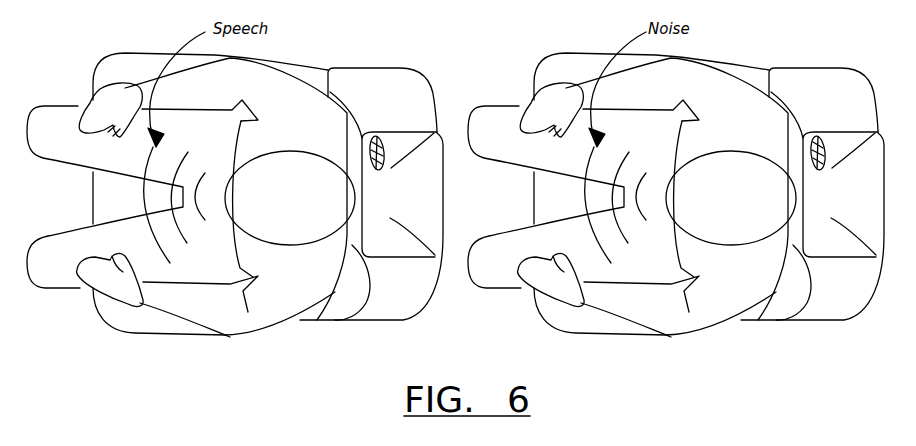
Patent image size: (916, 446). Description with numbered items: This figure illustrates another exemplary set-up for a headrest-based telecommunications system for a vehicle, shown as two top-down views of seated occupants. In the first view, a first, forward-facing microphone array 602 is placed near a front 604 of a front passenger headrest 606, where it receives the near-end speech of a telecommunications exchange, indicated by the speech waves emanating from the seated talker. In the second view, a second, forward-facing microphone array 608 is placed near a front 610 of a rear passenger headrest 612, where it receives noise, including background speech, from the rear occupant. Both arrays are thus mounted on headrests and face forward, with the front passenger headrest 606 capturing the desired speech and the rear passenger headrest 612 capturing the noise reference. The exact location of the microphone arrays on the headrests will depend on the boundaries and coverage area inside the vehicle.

The first forward-facing microphone array 602 is at (372, 137).
The front of front passenger headrest 604 is at (346, 250).
The front passenger headrest 606 is at (397, 243).
The second forward-facing microphone array 608 is at (813, 137).
The front of rear passenger headrest 610 is at (787, 250).
The rear passenger headrest 612 is at (838, 243).